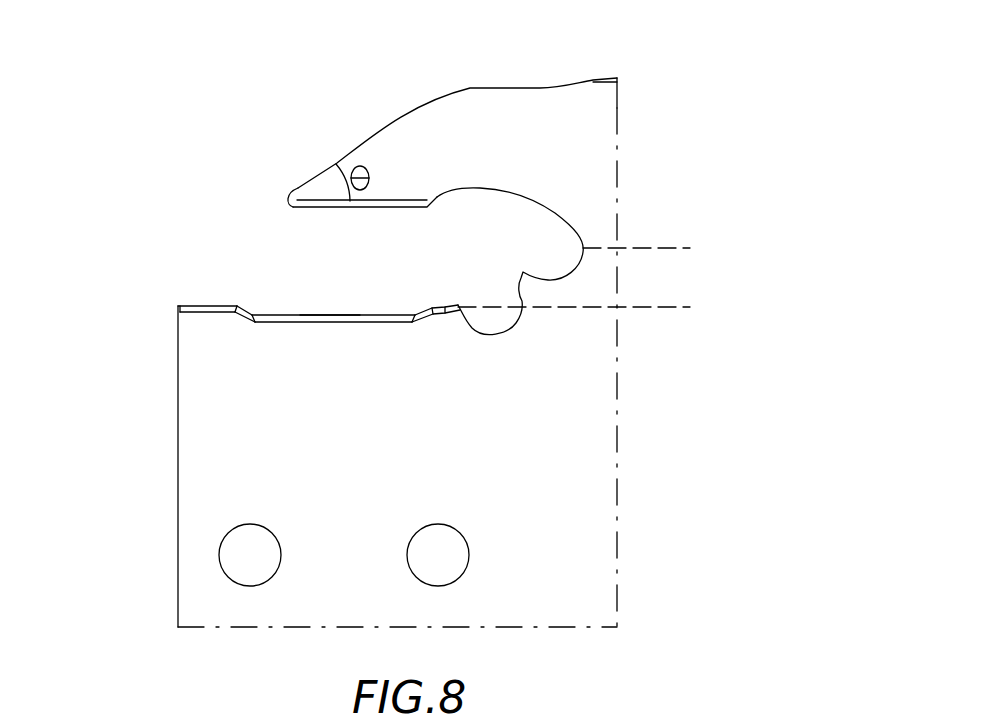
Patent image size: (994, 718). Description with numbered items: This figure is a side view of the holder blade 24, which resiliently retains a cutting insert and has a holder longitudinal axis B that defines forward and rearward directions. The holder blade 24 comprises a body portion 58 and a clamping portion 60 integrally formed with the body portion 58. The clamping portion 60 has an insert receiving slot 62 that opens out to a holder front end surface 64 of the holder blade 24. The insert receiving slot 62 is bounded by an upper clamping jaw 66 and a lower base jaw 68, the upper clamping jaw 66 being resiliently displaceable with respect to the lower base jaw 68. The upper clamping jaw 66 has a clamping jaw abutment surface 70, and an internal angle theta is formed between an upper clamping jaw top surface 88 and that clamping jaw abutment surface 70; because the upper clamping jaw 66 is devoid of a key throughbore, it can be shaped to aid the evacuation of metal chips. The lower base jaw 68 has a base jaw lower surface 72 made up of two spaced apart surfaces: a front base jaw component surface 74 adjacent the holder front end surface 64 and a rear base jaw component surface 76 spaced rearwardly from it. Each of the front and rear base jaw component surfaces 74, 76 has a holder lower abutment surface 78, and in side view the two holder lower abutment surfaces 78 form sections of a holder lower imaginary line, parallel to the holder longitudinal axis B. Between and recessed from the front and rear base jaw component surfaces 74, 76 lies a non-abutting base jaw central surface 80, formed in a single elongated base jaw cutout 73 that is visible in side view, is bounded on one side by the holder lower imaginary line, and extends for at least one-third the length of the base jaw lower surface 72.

The holder blade 24 is at (113, 167).
The body portion 58 is at (675, 148).
The clamping portion 60 is at (337, 137).
The insert receiving slot 62 is at (227, 213).
The holder front end surface 64 is at (178, 517).
The upper clamping jaw 66 is at (518, 72).
The lower base jaw 68 is at (125, 473).
The clamping jaw abutment surface 70 is at (322, 208).
The base jaw lower surface 72 is at (315, 315).
The elongated base jaw cutout 73 is at (357, 306).
The front base jaw component surface 74 is at (187, 298).
The rear base jaw component surface 76 is at (433, 288).
The holder lower abutment surface 78 is at (455, 304).
The non-abutting base jaw central surface 80 is at (243, 277).
The upper clamping jaw top surface 88 is at (388, 122).